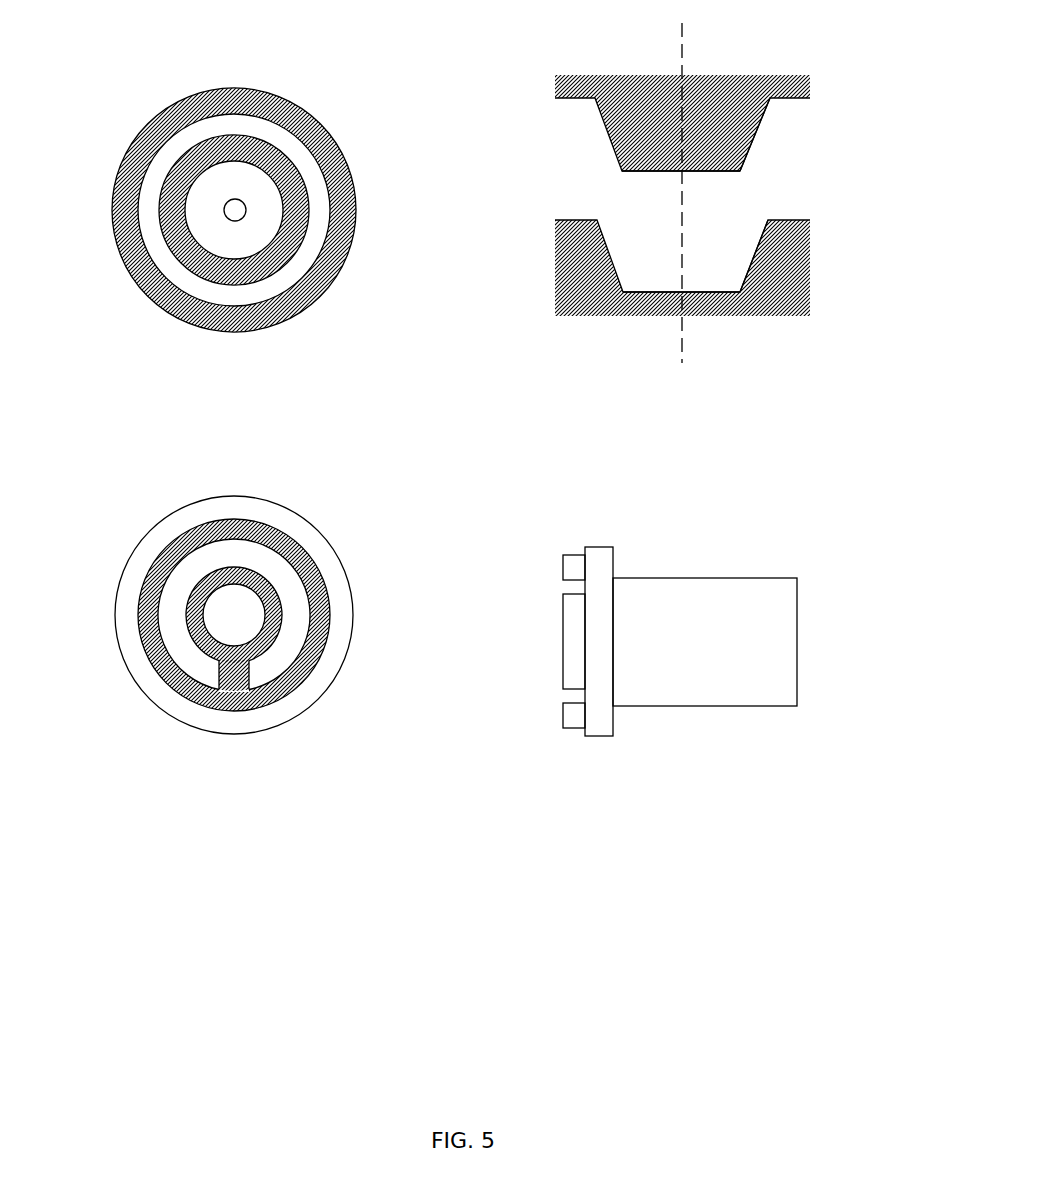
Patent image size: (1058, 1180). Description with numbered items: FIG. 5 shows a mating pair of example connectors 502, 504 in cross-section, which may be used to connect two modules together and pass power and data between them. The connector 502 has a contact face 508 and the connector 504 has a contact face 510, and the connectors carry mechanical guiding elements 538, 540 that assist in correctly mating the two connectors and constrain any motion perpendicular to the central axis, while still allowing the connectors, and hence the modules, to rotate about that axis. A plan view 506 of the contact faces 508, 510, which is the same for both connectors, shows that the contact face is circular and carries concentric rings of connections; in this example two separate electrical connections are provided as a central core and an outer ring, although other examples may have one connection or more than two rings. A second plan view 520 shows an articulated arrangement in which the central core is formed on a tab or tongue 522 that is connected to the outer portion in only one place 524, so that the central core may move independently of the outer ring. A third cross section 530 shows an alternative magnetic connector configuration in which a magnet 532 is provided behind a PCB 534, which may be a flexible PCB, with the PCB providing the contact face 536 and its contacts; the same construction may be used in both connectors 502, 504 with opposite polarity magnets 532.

The connector 502 is at (650, 140).
The connector 504 is at (643, 260).
The plan view 506 is at (241, 207).
The contact face 508 is at (655, 172).
The contact face 510 is at (656, 290).
The second plan view 520 is at (239, 614).
The tab or tongue 522 is at (277, 615).
The connection place 524 is at (237, 706).
The third cross section 530 is at (641, 615).
The magnet 532 is at (770, 635).
The PCB 534 is at (606, 737).
The contact face 536 is at (511, 627).
The mechanical guiding element 538 is at (758, 143).
The mechanical guiding element 540 is at (757, 243).